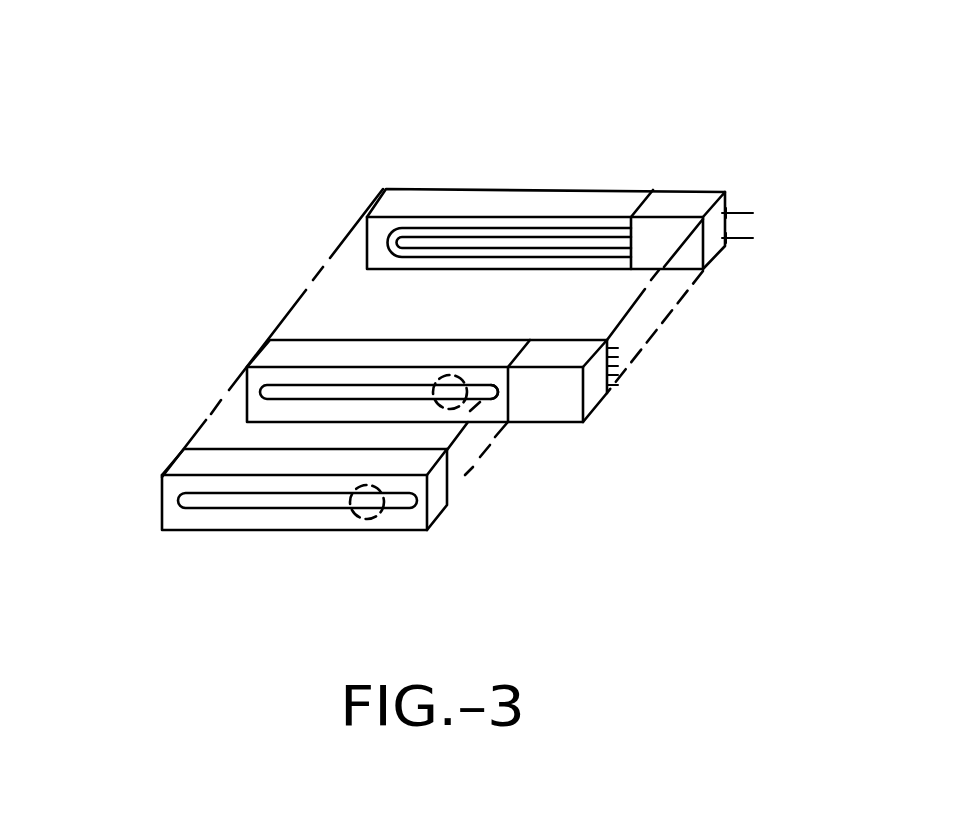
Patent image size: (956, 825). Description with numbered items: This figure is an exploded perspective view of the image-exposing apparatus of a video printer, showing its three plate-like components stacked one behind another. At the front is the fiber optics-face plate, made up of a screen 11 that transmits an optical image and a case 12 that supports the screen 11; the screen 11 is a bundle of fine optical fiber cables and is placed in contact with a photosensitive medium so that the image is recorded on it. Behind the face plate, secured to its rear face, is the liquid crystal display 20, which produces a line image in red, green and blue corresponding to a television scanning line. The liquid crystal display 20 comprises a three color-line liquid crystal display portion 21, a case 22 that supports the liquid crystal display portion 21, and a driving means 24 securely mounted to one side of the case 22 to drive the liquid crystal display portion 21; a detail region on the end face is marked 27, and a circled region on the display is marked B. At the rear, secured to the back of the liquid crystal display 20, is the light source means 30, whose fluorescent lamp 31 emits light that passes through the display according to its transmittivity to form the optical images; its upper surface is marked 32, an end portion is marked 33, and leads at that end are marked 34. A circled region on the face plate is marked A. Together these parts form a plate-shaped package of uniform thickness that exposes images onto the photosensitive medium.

The screen 11 is at (303, 503).
The case 12 is at (170, 515).
The liquid crystal display 20 is at (248, 343).
The three color-line liquid crystal display portion 21 is at (482, 393).
The case 22 is at (283, 350).
The driving means 24 is at (545, 402).
The grooves on end face 27 is at (612, 386).
The light source means 30 is at (368, 193).
The fluorescent lamp 31 is at (580, 230).
The top surface of third block 32 is at (457, 200).
The end portion of third block 33 is at (688, 200).
The terminal leads 34 is at (741, 213).
The detail area A is at (371, 521).
The detail area B is at (459, 370).